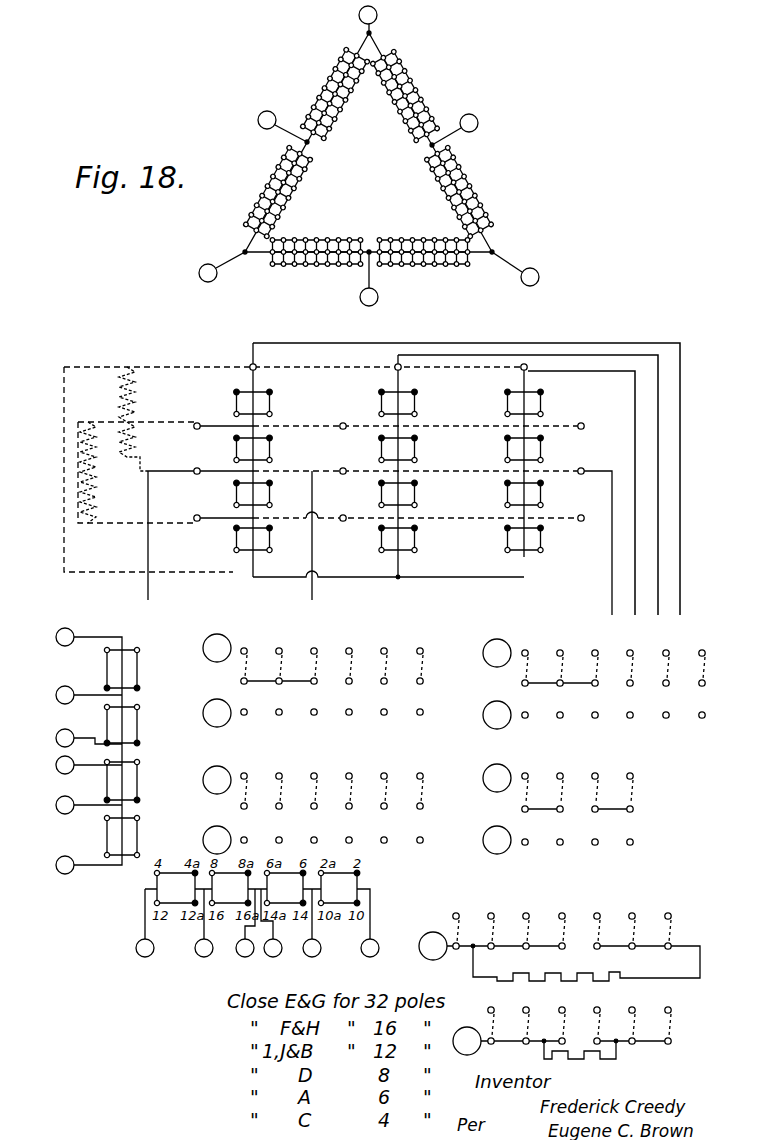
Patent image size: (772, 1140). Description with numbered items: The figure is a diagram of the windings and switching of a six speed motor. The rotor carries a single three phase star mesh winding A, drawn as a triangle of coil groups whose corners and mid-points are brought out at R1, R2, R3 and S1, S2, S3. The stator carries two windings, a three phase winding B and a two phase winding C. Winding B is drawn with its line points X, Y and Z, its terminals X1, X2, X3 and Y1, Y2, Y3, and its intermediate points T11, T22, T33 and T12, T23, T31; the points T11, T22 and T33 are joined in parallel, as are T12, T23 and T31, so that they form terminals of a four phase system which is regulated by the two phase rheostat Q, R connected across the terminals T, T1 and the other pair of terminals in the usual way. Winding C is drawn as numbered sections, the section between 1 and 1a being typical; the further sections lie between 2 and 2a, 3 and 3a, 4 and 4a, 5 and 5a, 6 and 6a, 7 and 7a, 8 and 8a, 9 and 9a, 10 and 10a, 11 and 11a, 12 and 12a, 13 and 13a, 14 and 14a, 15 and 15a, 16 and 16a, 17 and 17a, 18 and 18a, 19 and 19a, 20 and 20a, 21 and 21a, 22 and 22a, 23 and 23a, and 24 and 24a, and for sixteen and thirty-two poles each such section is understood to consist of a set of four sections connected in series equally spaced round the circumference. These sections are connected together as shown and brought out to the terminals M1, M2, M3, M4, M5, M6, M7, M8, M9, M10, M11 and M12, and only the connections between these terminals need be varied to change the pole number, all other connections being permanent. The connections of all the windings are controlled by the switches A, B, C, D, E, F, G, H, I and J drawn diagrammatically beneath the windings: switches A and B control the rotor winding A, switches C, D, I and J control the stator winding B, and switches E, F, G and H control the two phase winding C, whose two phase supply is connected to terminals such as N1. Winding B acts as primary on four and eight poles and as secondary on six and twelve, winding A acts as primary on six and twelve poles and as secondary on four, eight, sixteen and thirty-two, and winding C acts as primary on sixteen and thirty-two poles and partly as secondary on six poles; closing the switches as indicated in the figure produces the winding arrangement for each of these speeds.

The rotor winding A is at (386, 148).
The first stator winding B is at (350, 479).
The second stator winding C is at (120, 781).
The winding terminal R1 is at (384, 19).
The winding terminal R2 is at (530, 276).
The winding terminal R3 is at (218, 279).
The winding point S1 is at (267, 126).
The winding point S2 is at (366, 291).
The winding point S3 is at (466, 134).
The supply line X is at (112, 351).
The supply line Y is at (130, 449).
The supply line Z is at (241, 557).
The rheostat Q is at (138, 394).
The rheostat R is at (97, 472).
The terminal X1 is at (264, 358).
The terminal X2 is at (386, 358).
The terminal X3 is at (535, 378).
The terminal Y1 is at (186, 462).
The terminal Y2 is at (332, 462).
The terminal Y3 is at (591, 462).
The intermediate point T11 is at (182, 417).
The intermediate point T22 is at (328, 417).
The intermediate point T33 is at (596, 427).
The intermediate point T12 is at (182, 519).
The intermediate point T23 is at (328, 511).
The intermediate point T31 is at (595, 528).
The winding section end 1 is at (231, 550).
The switch contact 2 is at (231, 505).
The switch contact 3 is at (376, 460).
The switch contact 4 is at (376, 414).
The switch contact 5 is at (545, 550).
The switch contact 6 is at (545, 505).
The switch contact 7 is at (231, 460).
The switch contact 8 is at (231, 414).
The switch contact 9 is at (376, 550).
The switch contact 10 is at (372, 505).
The switch contact 11 is at (550, 460).
The switch contact 12 is at (550, 414).
The switch contact 13 is at (279, 550).
The switch contact 14 is at (279, 505).
The switch contact 15 is at (424, 460).
The switch contact 16 is at (424, 414).
The switch contact 17 is at (498, 550).
The switch contact 18 is at (498, 505).
The switch contact 19 is at (279, 460).
The switch contact 20 is at (279, 414).
The switch contact 21 is at (424, 550).
The switch contact 22 is at (424, 505).
The switch contact 23 is at (498, 460).
The switch contact 24 is at (498, 414).
The winding section end 1a is at (228, 528).
The switch contact 2a is at (228, 483).
The switch contact 3a is at (373, 438).
The switch contact 4a is at (373, 392).
The switch contact 5a is at (550, 528).
The switch contact 6a is at (550, 483).
The switch contact 7a is at (228, 438).
The switch contact 8a is at (228, 392).
The switch contact 9a is at (373, 528).
The switch contact 10a is at (368, 483).
The switch contact 11a is at (554, 438).
The switch contact 12a is at (554, 392).
The switch contact 13a is at (283, 528).
The switch contact 14a is at (283, 483).
The switch contact 15a is at (428, 438).
The switch contact 16a is at (428, 392).
The switch contact 17a is at (494, 528).
The switch contact 18a is at (494, 483).
The switch contact 19a is at (283, 438).
The switch contact 20a is at (283, 392).
The switch contact 21a is at (428, 528).
The switch contact 22a is at (428, 483).
The switch contact 23a is at (494, 438).
The switch contact 24a is at (494, 392).
The winding terminal M1 is at (54, 638).
The winding terminal M2 is at (54, 696).
The winding terminal M3 is at (54, 739).
The winding terminal M4 is at (54, 766).
The winding terminal M5 is at (54, 806).
The winding terminal M6 is at (54, 866).
The winding terminal M7 is at (142, 960).
The winding terminal M8 is at (201, 960).
The winding terminal M9 is at (242, 960).
The winding terminal M10 is at (278, 960).
The winding terminal M11 is at (316, 960).
The winding terminal M12 is at (374, 960).
The switch D is at (321, 665).
The switch E is at (317, 718).
The switch F is at (323, 786).
The switch G is at (319, 836).
The switch H is at (602, 667).
The switch I is at (598, 721).
The switch J is at (558, 783).
The two phase supply terminal N1 is at (566, 846).
The four phase terminal T is at (559, 937).
The four phase terminal T1 is at (569, 1025).